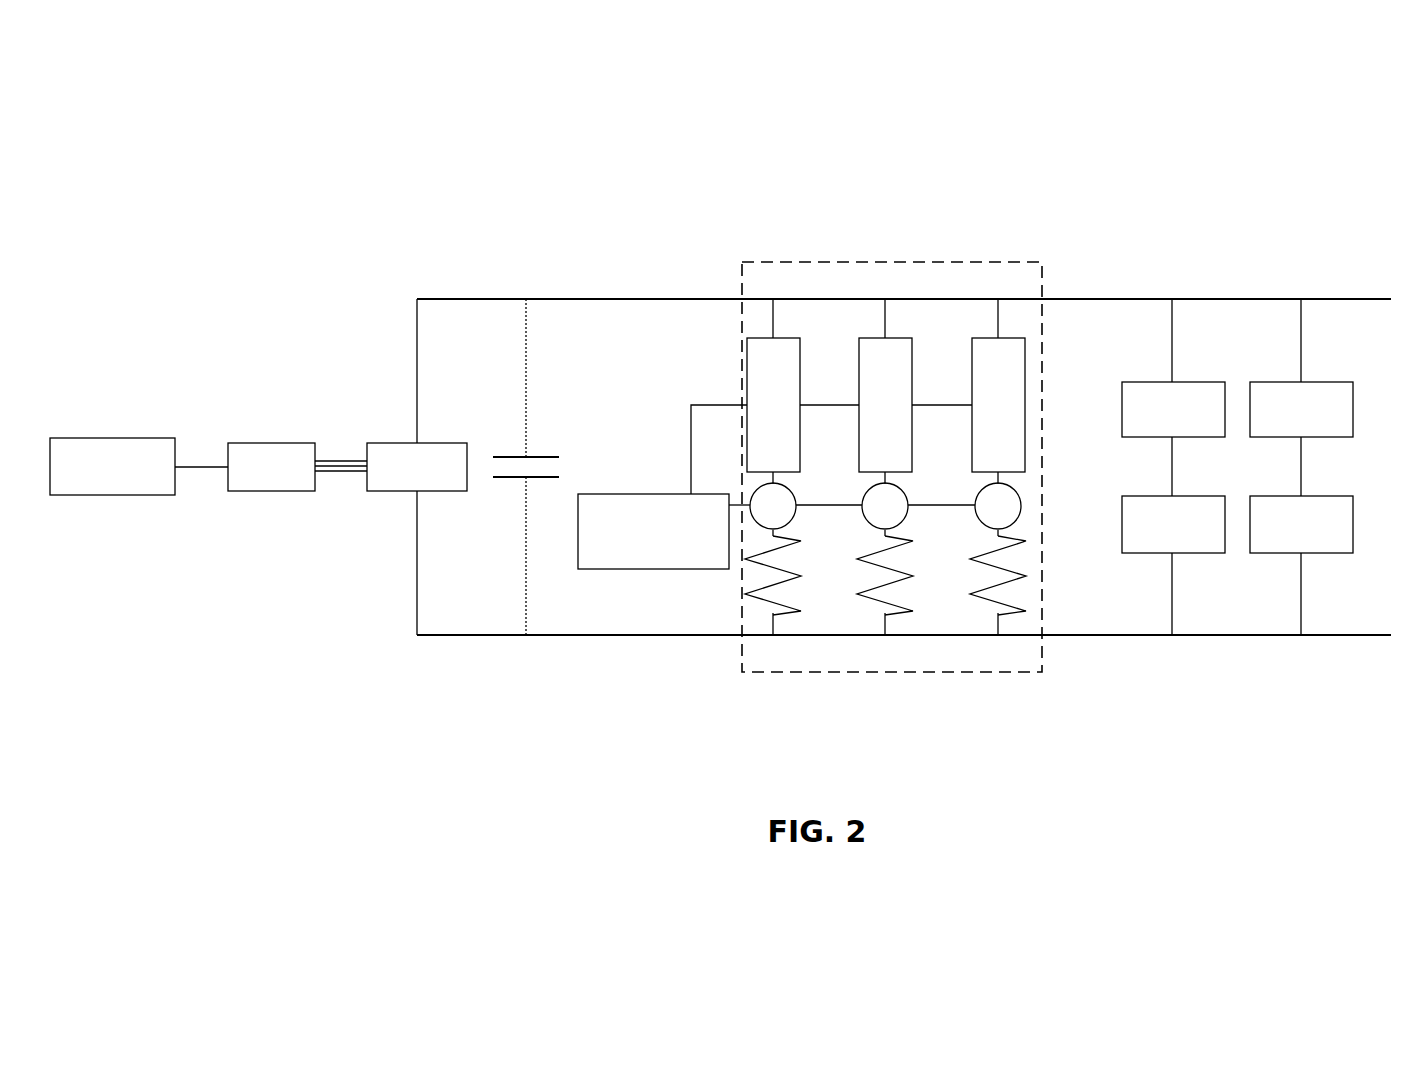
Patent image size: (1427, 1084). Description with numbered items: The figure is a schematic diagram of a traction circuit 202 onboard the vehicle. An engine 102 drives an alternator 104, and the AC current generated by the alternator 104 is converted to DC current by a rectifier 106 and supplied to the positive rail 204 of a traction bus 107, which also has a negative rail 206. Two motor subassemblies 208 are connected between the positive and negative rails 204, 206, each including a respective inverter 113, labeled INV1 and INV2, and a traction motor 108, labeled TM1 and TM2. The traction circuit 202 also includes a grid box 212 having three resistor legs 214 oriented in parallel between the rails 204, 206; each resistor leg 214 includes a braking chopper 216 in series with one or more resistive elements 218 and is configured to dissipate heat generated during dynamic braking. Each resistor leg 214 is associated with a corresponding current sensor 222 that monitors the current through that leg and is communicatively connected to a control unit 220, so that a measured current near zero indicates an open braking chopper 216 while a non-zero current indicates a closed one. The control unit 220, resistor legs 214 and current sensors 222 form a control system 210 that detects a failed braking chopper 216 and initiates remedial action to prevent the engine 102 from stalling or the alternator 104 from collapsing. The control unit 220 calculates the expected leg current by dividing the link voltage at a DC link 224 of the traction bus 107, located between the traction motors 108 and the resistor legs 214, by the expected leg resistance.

The engine 102 is at (113, 438).
The alternator 104 is at (270, 443).
The rectifier 106 is at (388, 443).
The traction bus 107 is at (417, 338).
The traction motor 108 is at (1196, 553).
The inverter 113 is at (1196, 382).
The traction circuit 202 is at (532, 236).
The positive rail 204 is at (708, 298).
The negative rail 206 is at (598, 637).
The motor subassembly 208 is at (1372, 489).
The control system 210 is at (716, 605).
The grid box 212 is at (893, 262).
The resistor leg 214 is at (777, 318).
The braking chopper 216 is at (803, 367).
The resistive element 218 is at (797, 578).
The control unit 220 is at (608, 494).
The current sensor 222 is at (795, 516).
The DC link 224 is at (1121, 299).